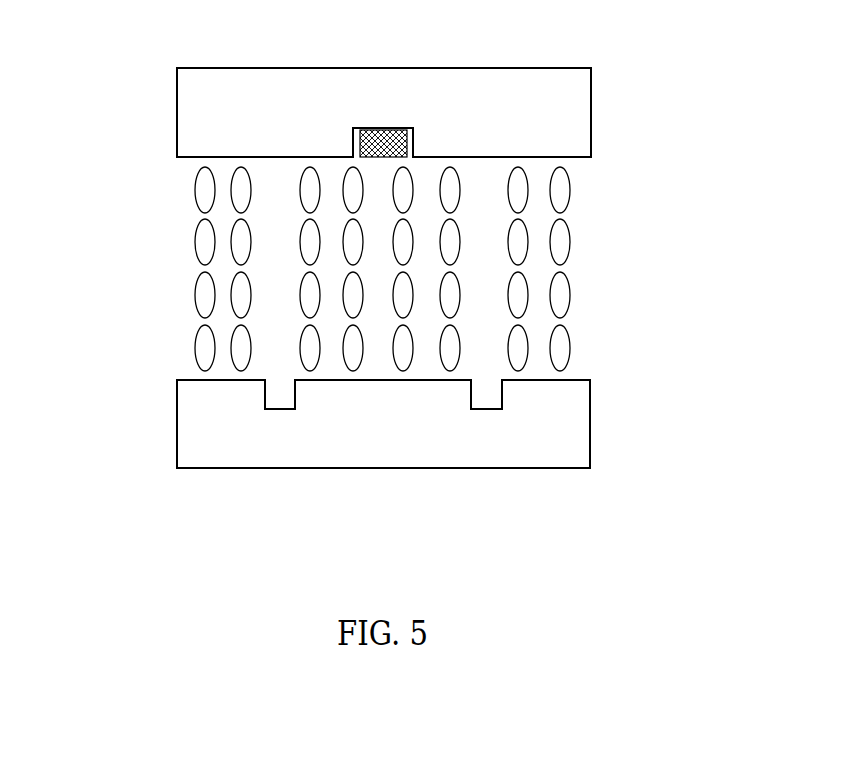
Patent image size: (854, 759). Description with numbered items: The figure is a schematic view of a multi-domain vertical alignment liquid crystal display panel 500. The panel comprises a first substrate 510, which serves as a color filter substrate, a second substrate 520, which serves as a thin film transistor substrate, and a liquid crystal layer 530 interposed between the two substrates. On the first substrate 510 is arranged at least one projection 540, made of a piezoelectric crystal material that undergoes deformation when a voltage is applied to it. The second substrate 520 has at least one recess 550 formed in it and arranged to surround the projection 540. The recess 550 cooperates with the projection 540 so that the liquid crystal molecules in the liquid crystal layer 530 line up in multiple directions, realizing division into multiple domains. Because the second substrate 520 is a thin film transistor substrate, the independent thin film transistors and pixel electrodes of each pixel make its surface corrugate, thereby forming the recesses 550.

The multi-domain vertical alignment liquid crystal display panel 500 is at (405, 53).
The first substrate 510 is at (591, 110).
The second substrate 520 is at (590, 427).
The liquid crystal layer 530 is at (162, 168).
The projection 540 is at (383, 158).
The recess 550 is at (283, 381).